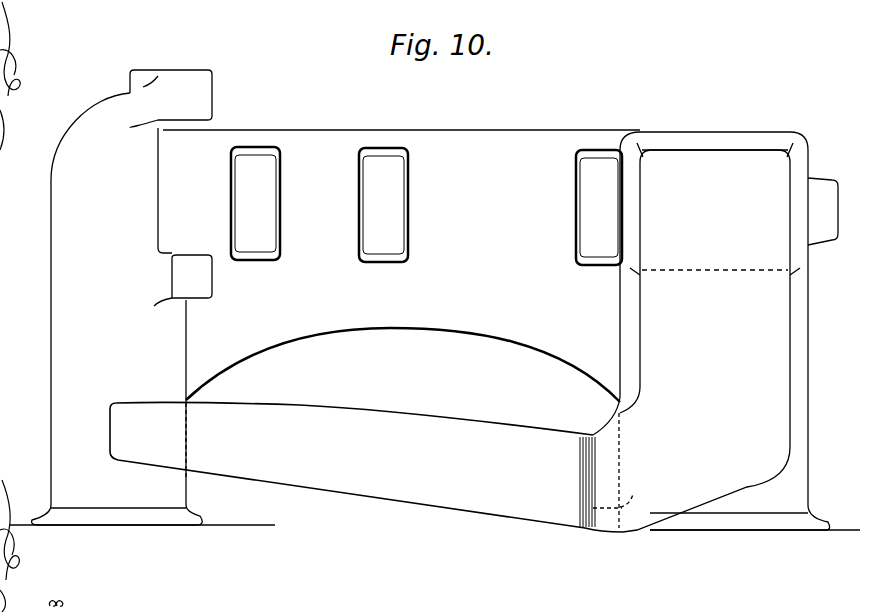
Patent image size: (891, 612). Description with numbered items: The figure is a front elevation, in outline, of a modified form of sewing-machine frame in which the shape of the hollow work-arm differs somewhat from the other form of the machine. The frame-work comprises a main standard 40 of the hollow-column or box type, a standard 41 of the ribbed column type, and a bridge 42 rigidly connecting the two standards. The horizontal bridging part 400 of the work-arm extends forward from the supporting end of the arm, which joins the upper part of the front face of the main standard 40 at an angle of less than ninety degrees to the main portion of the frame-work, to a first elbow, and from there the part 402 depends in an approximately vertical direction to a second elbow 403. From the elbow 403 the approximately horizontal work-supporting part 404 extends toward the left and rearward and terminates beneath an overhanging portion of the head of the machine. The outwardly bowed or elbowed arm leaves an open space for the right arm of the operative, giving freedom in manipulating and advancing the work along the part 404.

The main standard 40 is at (808, 323).
The standard 41 is at (58, 375).
The bridge 42 is at (443, 318).
The horizontal bridging part 400 is at (778, 174).
The depending part 402 is at (780, 429).
The second elbow 403 is at (733, 490).
The work-supporting part 404 is at (428, 497).